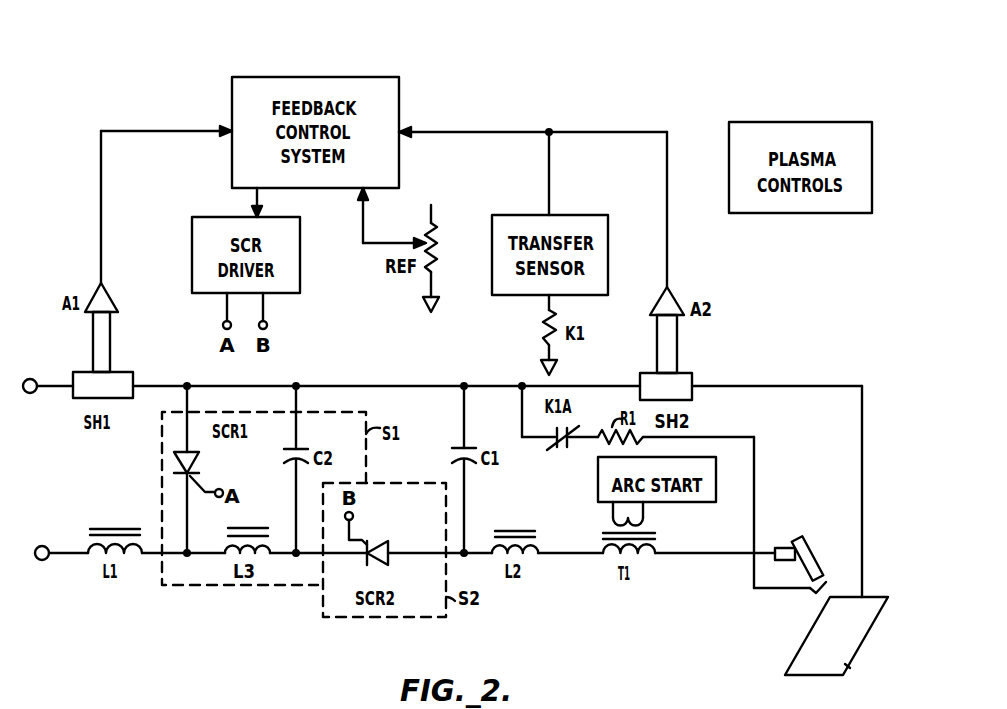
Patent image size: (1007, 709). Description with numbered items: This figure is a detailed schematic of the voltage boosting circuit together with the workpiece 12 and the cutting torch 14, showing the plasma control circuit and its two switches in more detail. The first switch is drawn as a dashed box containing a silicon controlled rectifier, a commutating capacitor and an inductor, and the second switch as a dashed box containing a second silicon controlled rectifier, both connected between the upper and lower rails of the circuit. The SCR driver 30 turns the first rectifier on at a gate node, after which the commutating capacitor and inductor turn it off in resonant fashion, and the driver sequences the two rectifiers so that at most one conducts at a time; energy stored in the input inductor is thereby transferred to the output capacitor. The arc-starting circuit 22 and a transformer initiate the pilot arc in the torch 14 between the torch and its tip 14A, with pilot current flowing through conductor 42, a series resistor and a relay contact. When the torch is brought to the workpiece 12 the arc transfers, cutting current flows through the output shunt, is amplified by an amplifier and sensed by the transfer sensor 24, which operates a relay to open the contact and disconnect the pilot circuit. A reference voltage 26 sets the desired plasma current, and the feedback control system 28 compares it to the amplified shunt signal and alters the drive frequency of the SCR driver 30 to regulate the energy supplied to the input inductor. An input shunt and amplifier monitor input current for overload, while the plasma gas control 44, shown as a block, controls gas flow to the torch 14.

The workpiece 12 is at (790, 666).
The cutting torch 14 is at (797, 539).
The torch tip 14A is at (830, 575).
The arc-starting circuit 22 is at (596, 491).
The transfer sensor 24 is at (580, 215).
The reference voltage 26 is at (437, 266).
The feedback control system 28 is at (388, 77).
The SCR driver 30 is at (300, 228).
The conductor 42 is at (760, 489).
The plasma gas control 44 is at (789, 114).